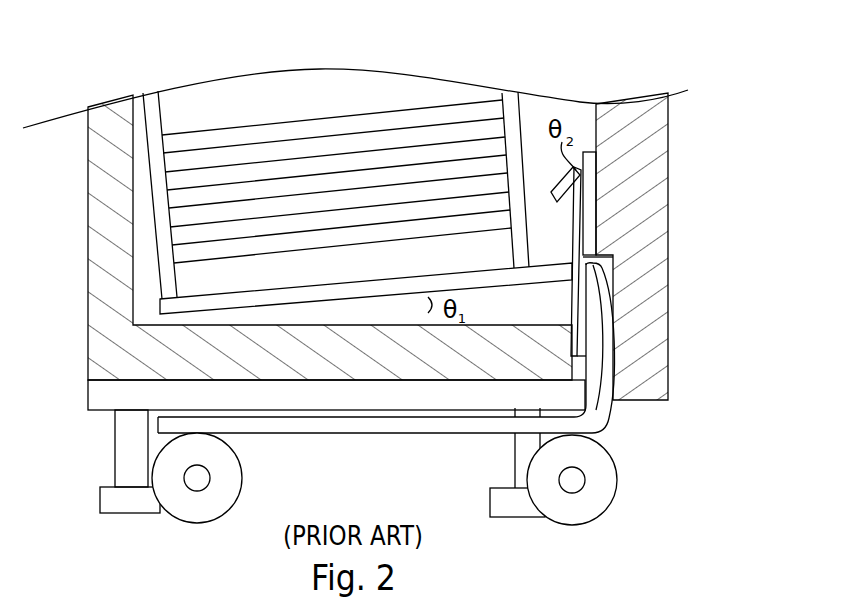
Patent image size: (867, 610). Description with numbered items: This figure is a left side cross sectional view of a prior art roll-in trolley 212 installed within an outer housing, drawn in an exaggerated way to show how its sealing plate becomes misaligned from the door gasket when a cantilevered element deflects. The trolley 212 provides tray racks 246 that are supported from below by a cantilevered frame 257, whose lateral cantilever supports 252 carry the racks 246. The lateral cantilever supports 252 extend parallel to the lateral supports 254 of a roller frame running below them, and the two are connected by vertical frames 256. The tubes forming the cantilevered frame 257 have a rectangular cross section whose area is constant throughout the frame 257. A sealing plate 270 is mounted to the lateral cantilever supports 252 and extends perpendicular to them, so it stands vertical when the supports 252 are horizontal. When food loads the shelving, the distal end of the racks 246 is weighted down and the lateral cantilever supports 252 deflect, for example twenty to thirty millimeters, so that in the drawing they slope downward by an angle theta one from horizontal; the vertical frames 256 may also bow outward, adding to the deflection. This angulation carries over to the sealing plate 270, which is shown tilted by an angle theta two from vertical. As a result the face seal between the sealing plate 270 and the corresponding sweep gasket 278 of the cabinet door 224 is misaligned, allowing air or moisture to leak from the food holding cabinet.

The roll-in trolley 212 is at (522, 77).
The tray racks 246 is at (152, 107).
The lateral cantilever supports 252 is at (233, 300).
The sealing plate 270 is at (569, 229).
The sweep gasket 278 is at (597, 192).
The cabinet door 224 is at (655, 292).
The cantilevered frame 257 is at (624, 339).
The vertical frames 256 is at (604, 406).
The lateral supports 254 is at (402, 433).